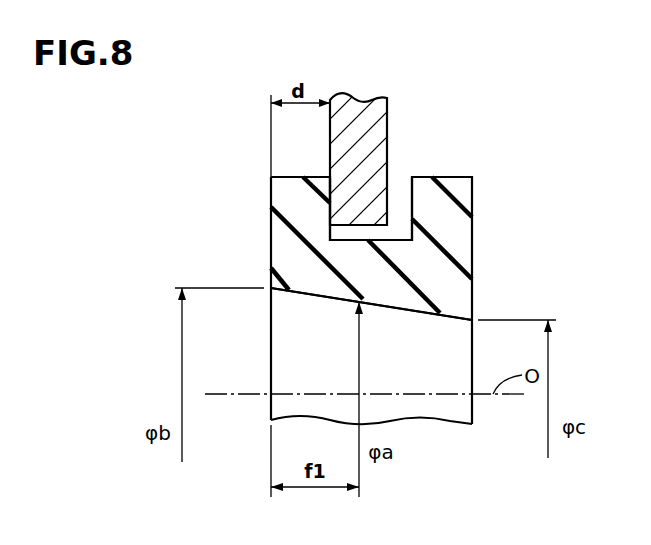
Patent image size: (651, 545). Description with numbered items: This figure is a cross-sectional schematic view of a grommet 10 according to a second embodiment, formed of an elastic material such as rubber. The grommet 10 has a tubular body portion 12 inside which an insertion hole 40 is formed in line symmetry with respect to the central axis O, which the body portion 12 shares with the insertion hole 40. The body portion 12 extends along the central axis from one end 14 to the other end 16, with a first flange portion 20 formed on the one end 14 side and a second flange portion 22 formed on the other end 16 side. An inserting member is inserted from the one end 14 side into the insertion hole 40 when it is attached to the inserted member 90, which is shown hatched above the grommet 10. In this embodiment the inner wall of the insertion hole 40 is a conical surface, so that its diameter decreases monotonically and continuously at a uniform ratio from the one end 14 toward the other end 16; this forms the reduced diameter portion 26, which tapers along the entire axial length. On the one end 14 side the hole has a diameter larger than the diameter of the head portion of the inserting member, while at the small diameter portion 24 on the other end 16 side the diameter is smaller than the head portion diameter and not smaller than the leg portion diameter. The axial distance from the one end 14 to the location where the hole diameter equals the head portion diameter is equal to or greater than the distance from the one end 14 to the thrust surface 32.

The grommet 10 is at (293, 242).
The body portion 12 is at (290, 272).
The one end 14 is at (272, 217).
The other end 16 is at (473, 216).
The first flange portion 20 is at (292, 189).
The second flange portion 22 is at (450, 189).
The small diameter portion 24 is at (442, 311).
The reduced diameter portion 26 is at (377, 298).
The thrust surface 32 is at (338, 228).
The insertion hole 40 is at (432, 380).
The inserted member 90 is at (358, 141).